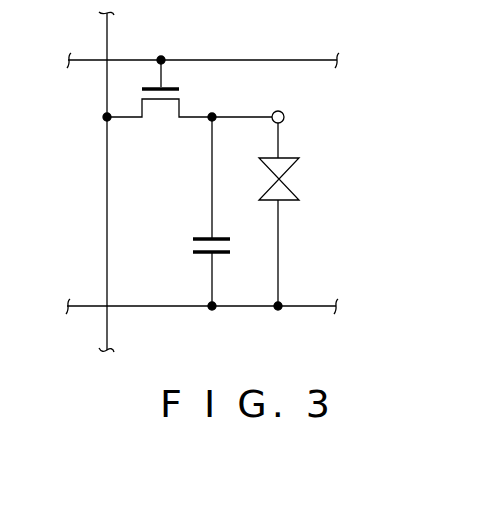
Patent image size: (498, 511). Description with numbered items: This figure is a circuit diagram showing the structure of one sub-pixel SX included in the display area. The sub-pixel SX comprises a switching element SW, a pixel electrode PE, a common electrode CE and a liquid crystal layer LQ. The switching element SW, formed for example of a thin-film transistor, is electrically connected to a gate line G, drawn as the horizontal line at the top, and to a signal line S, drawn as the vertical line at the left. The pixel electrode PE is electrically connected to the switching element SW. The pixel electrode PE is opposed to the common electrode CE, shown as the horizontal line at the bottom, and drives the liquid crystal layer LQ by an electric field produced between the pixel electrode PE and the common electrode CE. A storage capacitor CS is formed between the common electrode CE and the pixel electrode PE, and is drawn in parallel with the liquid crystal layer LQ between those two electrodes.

The sub-pixel SX is at (250, 188).
The signal line S is at (106, 175).
The gate line G is at (89, 59).
The switching element SW is at (195, 101).
The pixel electrode PE is at (284, 117).
The storage capacitor CS is at (180, 243).
The liquid crystal layer LQ is at (311, 180).
The common electrode CE is at (308, 308).